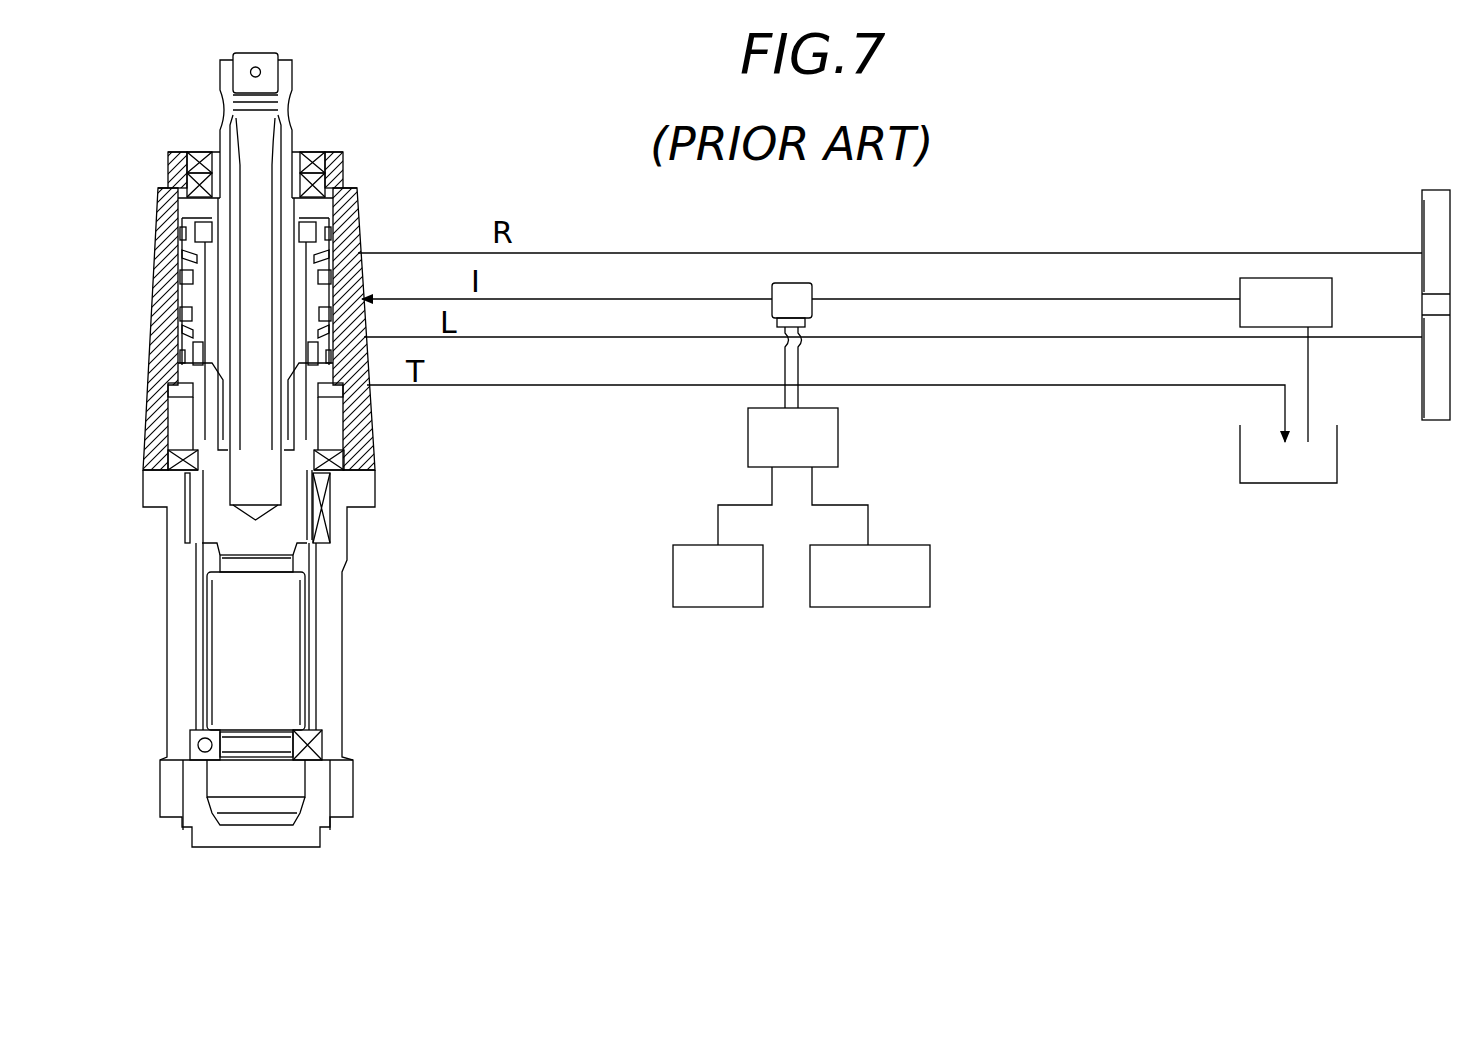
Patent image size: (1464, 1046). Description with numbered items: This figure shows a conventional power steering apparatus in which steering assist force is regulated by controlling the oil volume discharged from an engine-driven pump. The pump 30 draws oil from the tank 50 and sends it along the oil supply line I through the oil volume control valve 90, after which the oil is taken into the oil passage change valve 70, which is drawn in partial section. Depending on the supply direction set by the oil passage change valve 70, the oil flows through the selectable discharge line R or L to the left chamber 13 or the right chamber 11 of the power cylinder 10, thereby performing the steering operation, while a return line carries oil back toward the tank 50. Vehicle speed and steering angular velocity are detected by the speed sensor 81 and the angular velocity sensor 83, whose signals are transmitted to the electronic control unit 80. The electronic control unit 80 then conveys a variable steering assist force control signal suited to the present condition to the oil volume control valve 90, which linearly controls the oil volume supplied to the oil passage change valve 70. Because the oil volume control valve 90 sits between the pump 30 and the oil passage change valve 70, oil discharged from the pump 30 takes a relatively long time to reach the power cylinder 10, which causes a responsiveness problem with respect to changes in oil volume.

The power cylinder 10 is at (1427, 177).
The right chamber 11 is at (1428, 223).
The left chamber 13 is at (1432, 392).
The pump 30 is at (1097, 358).
The tank 50 is at (1266, 454).
The oil passage change valve 70 is at (335, 112).
The electronic control unit 80 is at (802, 476).
The speed sensor 81 is at (697, 576).
The angular velocity sensor 83 is at (894, 576).
The oil volume control valve 90 is at (767, 333).